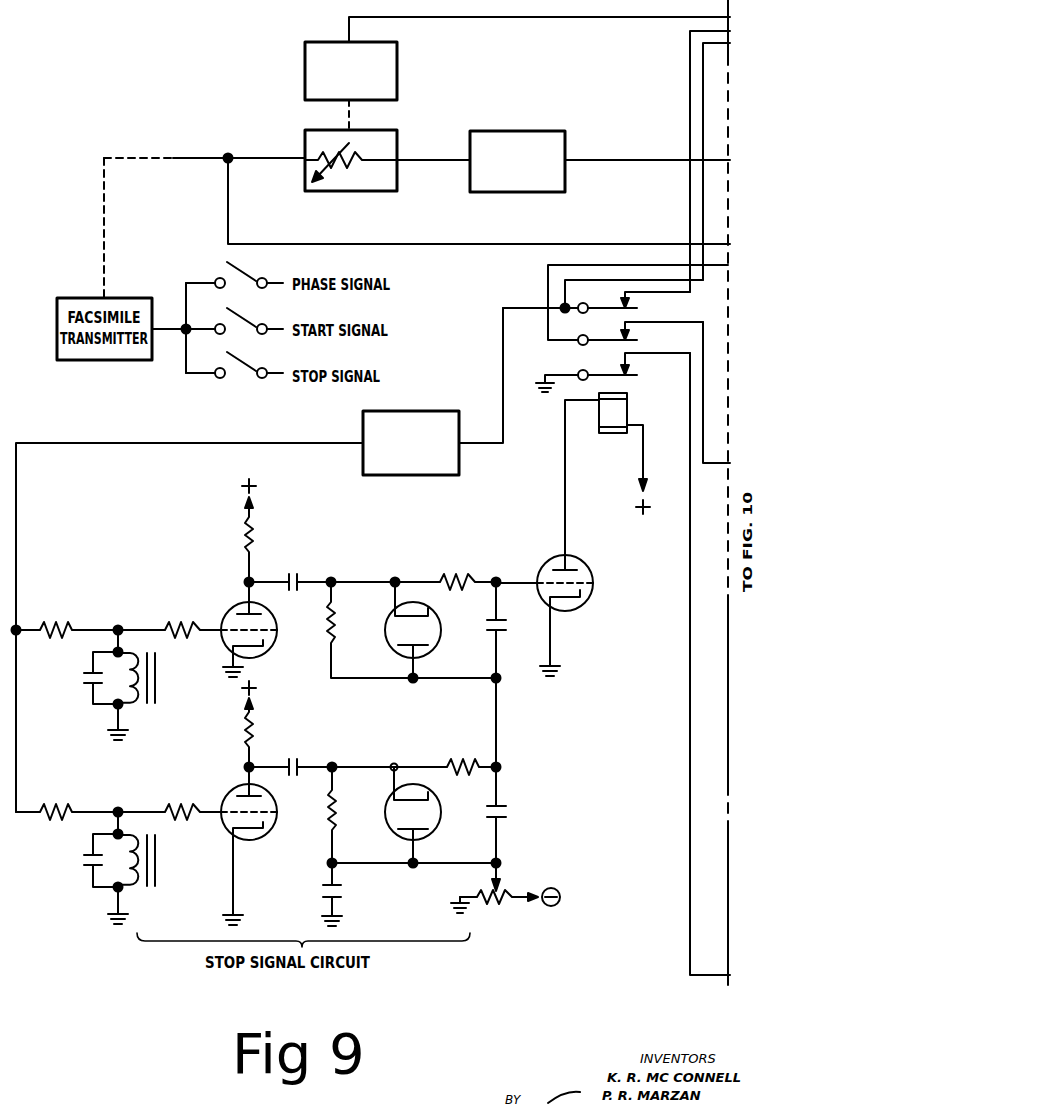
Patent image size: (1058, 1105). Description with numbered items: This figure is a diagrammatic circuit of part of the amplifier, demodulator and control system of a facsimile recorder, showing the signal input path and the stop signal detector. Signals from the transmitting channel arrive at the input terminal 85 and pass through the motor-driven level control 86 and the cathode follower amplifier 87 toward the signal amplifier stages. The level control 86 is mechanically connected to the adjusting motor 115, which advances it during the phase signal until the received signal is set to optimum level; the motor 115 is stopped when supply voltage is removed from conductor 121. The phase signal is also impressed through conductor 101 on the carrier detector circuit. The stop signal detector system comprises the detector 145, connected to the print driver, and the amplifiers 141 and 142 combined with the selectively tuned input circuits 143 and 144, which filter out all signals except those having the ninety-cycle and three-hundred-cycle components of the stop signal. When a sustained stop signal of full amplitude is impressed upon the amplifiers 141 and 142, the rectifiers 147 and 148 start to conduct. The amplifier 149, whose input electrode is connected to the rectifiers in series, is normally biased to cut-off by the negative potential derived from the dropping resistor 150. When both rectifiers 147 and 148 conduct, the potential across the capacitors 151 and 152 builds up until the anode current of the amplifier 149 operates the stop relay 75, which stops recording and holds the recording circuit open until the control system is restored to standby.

The stop relay 75 is at (627, 410).
The input terminal 85 is at (212, 160).
The level control 86 is at (305, 172).
The cathode follower amplifier 87 is at (470, 170).
The conductor 101 is at (398, 244).
The adjusting motor 115 is at (397, 70).
The conductor 121 is at (540, 17).
The amplifier 141 is at (268, 652).
The amplifier 142 is at (267, 835).
The selectively tuned input circuit 143 is at (125, 707).
The selectively tuned input circuit 144 is at (125, 889).
The detector 145 is at (459, 462).
The rectifier 147 is at (388, 650).
The rectifier 148 is at (432, 835).
The amplifier 149 is at (589, 566).
The dropping resistor 150 is at (494, 902).
The capacitor 151 is at (490, 636).
The capacitor 152 is at (506, 806).